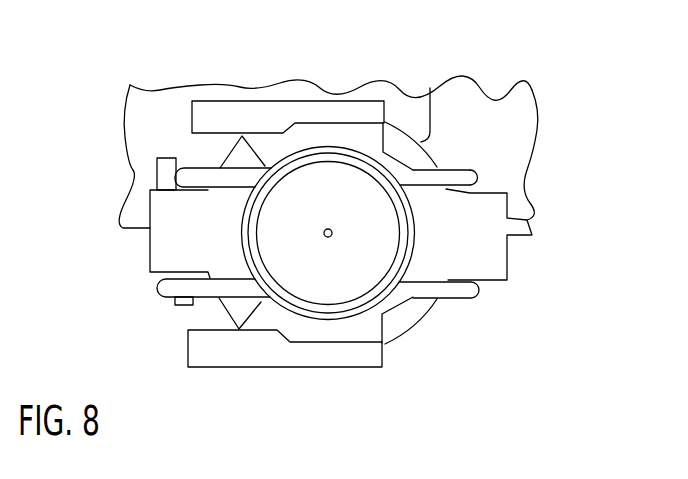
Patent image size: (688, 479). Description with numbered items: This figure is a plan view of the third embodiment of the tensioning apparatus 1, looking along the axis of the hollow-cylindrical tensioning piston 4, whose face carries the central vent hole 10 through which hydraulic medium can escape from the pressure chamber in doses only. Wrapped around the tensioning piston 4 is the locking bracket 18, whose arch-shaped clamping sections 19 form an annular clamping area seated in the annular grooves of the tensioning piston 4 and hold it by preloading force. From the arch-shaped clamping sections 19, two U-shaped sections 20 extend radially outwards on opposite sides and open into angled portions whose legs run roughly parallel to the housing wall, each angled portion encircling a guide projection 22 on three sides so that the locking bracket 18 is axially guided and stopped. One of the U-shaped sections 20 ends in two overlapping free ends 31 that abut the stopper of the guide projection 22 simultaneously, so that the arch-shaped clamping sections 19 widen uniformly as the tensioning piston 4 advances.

The tensioning apparatus 1 is at (181, 61).
The tensioning piston 4 is at (282, 192).
The vent hole 10 is at (329, 146).
The locking bracket 18 is at (448, 173).
The arch-shaped clamping sections 19 is at (387, 157).
The U-shaped section 20 is at (477, 167).
The guide projection 22 is at (533, 222).
The overlapping free ends 31 is at (157, 167).